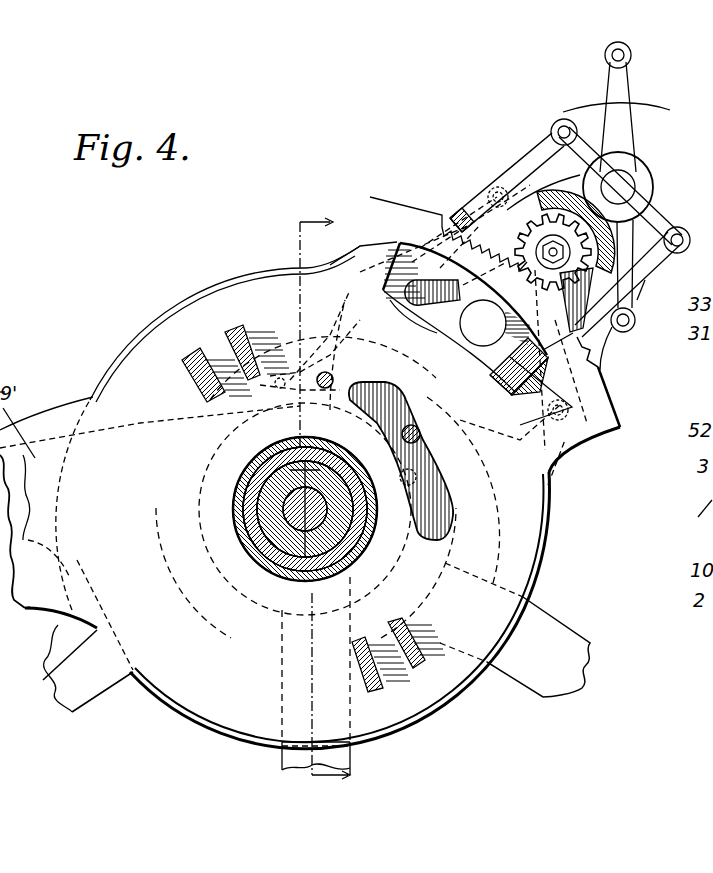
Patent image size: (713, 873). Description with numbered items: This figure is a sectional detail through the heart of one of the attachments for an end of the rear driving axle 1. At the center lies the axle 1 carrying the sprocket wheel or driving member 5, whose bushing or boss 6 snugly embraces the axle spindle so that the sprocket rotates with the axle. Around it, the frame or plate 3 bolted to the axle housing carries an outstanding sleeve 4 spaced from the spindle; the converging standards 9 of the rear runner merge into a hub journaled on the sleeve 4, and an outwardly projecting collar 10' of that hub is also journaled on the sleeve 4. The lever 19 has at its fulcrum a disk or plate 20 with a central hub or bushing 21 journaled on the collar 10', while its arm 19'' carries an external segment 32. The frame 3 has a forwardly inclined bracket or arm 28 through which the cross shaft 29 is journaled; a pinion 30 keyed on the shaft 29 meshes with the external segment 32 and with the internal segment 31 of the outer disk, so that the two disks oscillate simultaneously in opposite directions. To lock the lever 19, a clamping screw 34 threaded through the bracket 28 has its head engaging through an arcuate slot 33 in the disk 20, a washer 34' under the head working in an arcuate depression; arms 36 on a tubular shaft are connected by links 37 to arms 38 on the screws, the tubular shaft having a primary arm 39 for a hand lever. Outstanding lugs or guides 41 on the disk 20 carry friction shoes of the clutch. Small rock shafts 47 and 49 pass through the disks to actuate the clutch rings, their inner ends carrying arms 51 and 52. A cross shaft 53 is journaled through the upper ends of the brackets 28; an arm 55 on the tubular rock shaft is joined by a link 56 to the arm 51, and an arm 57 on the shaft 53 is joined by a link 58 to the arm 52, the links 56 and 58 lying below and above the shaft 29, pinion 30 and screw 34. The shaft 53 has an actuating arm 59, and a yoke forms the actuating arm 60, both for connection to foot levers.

The rear driving axle 1 is at (300, 518).
The frame or plate 3 is at (118, 357).
The outstanding sleeve 4 is at (345, 537).
The sprocket wheel or driving member 5 is at (322, 498).
The bushing or boss 6 is at (277, 527).
The converging standards 9 is at (95, 682).
The sleeve or collar 10' is at (247, 509).
The lever 19 is at (35, 651).
The arm of the lever 19'' is at (341, 216).
The disk or plate 20 is at (127, 397).
The hub or bushing 21 is at (240, 480).
The bracket or arm 28 is at (598, 358).
The cross shaft 29 is at (550, 248).
The pinion 30 is at (635, 327).
The internal segment 31 is at (572, 213).
The external segment 32 is at (610, 420).
The arcuate slot 33 is at (528, 413).
The clamping screw 34 is at (465, 319).
The washer 34' is at (403, 329).
The arm 36 is at (517, 187).
The link 37 is at (452, 215).
The arm 38 is at (395, 257).
The primary arm 39 is at (598, 436).
The lugs or guides 41 is at (205, 345).
The rock shaft 47 is at (420, 460).
The rock shaft 49 is at (323, 373).
The arm 51 is at (428, 478).
The arm 52 is at (320, 375).
The cross shaft 53 is at (620, 186).
The arm 55 is at (653, 212).
The link 56 is at (643, 277).
The arm 57 is at (580, 147).
The link 58 is at (512, 158).
The actuating arm 59 is at (633, 330).
The actuating arm 60 is at (627, 85).